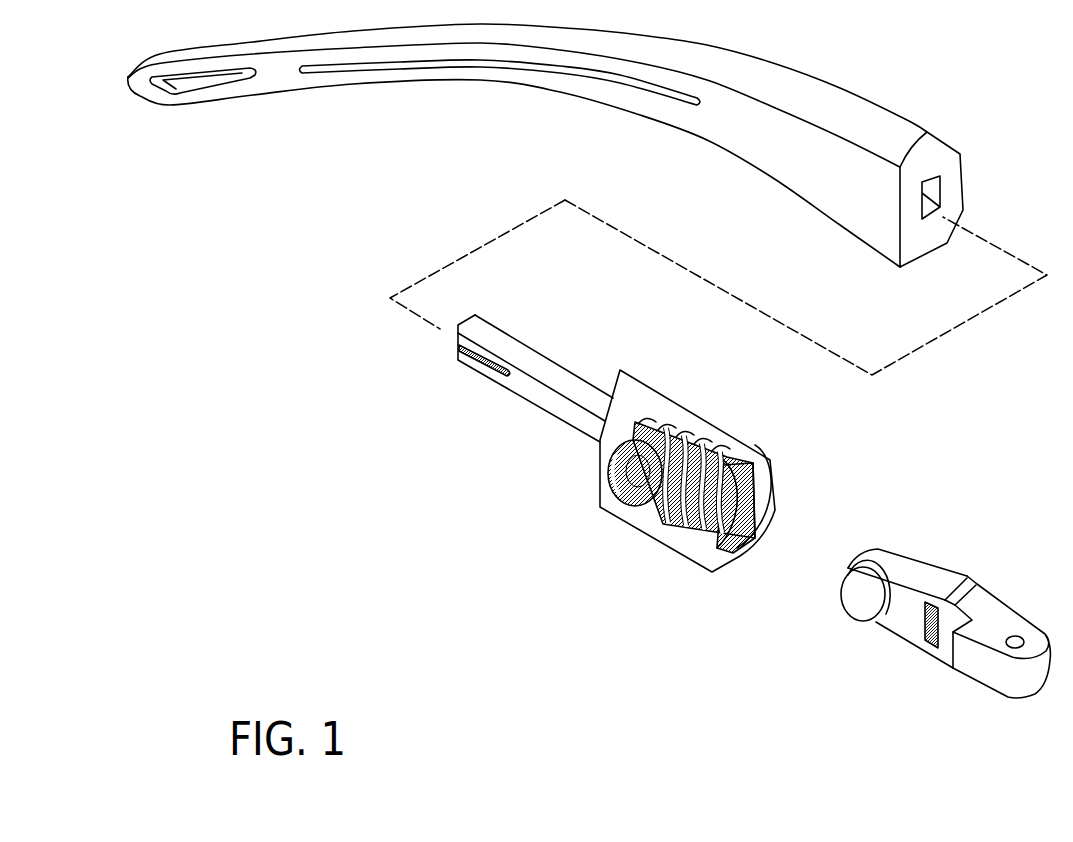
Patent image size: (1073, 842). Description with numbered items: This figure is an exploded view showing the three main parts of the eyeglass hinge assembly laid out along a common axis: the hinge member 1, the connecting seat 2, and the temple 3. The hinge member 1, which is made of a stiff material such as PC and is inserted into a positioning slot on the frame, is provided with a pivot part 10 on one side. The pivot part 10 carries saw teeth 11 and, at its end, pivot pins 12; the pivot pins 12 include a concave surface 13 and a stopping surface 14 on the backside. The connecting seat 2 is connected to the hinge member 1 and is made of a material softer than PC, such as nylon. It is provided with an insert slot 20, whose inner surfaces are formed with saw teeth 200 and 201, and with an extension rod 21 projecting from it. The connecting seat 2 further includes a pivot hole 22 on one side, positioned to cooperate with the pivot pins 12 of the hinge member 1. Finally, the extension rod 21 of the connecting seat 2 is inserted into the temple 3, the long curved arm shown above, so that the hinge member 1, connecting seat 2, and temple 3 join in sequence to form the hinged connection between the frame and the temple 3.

The hinge member 1 is at (901, 615).
The pivot part 10 is at (1013, 655).
The saw teeth 11 is at (927, 650).
The pivot pins 12 is at (860, 597).
The concave surface 13 is at (903, 560).
The stopping surface 14 is at (960, 577).
The connecting seat 2 is at (620, 497).
The insert slot 20 is at (757, 502).
The saw teeth 200 is at (670, 528).
The saw teeth 201 is at (683, 433).
The extension rod 21 is at (528, 401).
The pivot hole 22 is at (620, 477).
The temple 3 is at (343, 108).